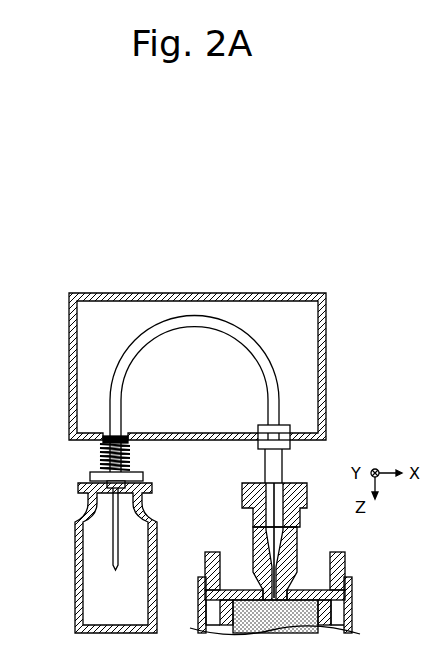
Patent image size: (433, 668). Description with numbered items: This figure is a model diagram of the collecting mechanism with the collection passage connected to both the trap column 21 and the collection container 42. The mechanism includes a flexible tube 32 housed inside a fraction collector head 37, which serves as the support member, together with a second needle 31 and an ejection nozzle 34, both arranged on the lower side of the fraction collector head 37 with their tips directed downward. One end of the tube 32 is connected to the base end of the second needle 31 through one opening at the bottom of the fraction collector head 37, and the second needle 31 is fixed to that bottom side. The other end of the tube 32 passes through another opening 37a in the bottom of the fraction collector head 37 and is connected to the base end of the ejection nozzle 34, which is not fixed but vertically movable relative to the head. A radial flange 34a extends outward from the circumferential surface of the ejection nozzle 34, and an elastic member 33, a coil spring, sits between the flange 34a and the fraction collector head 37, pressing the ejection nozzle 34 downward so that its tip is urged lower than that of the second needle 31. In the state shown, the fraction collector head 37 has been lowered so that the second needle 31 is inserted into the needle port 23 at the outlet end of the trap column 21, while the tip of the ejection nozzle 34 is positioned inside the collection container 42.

The trap column 21 is at (352, 608).
The needle port 23 is at (253, 541).
The second needle 31 is at (243, 496).
The flexible tube 32 is at (195, 315).
The elastic member 33 is at (100, 453).
The ejection nozzle 34 is at (112, 535).
The radial flange 34a is at (90, 477).
The fraction collector head 37 is at (270, 293).
The opening 37a is at (106, 434).
The collection container 42 is at (75, 588).